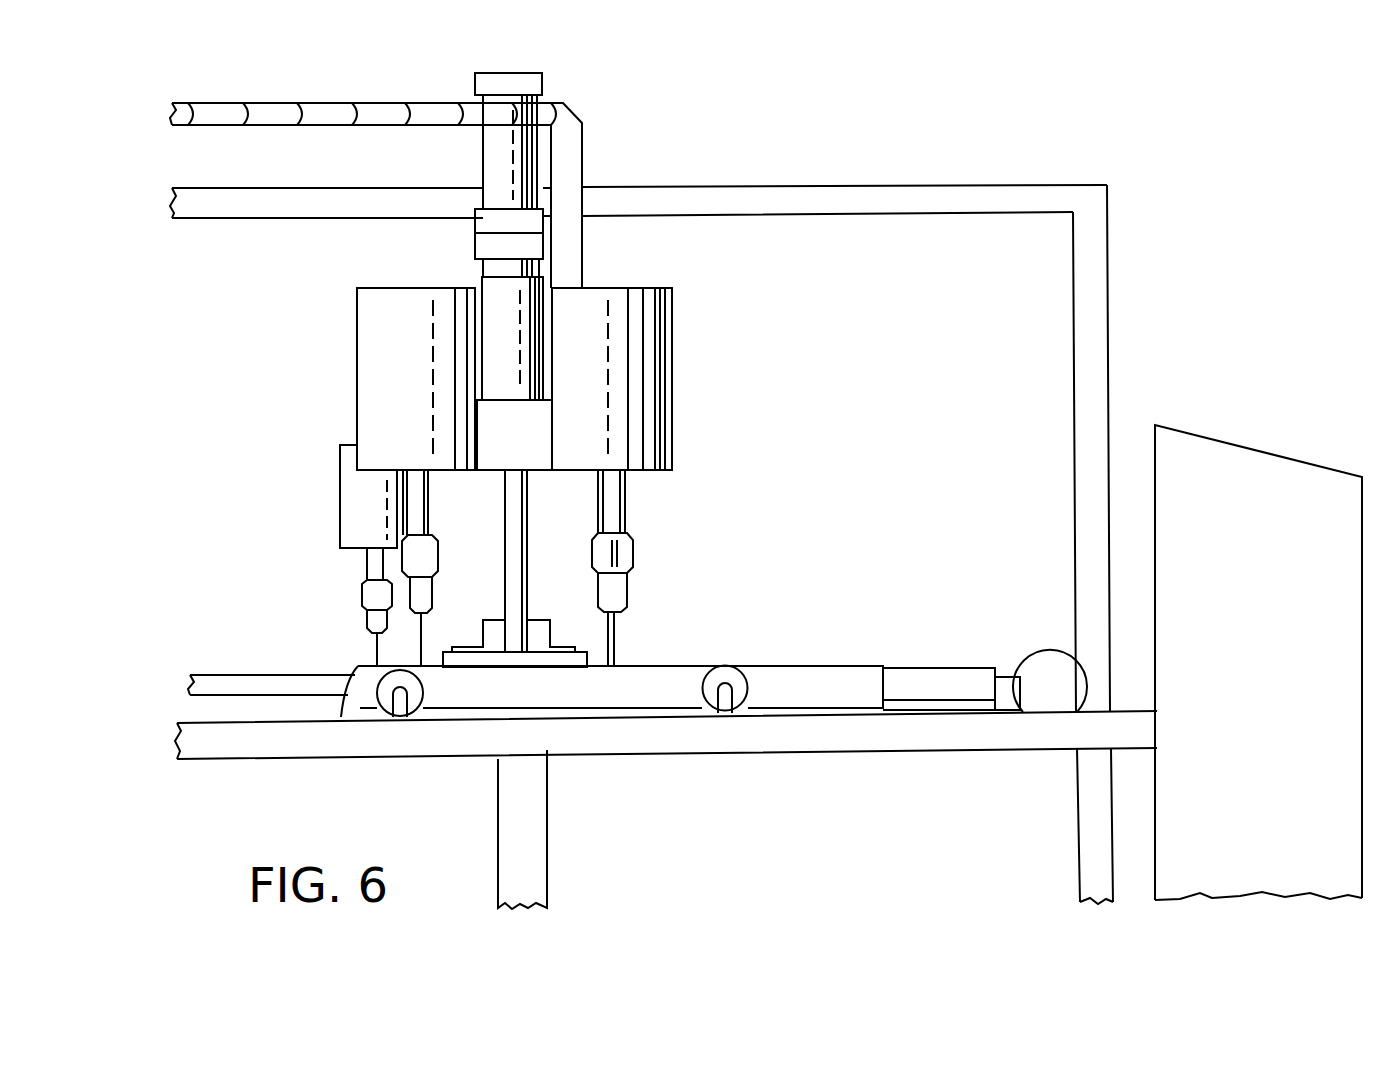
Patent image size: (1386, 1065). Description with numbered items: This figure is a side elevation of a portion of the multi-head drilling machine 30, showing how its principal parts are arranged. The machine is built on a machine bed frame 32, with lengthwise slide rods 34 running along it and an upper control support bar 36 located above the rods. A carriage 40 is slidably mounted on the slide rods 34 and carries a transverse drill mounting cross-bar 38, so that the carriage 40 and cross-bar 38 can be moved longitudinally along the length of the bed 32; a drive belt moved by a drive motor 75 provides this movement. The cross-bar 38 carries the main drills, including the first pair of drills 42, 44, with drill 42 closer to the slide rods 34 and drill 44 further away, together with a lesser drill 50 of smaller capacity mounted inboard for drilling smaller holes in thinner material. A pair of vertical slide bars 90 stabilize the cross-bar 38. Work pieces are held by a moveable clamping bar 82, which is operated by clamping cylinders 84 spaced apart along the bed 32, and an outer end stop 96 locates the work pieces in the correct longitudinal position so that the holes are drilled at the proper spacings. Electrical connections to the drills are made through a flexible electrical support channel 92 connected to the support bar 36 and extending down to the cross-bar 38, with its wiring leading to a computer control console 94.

The multi-head drilling machine 30 is at (858, 784).
The machine bed frame 32 is at (655, 742).
The lengthwise slide rods 34 is at (277, 668).
The upper control support bar 36 is at (886, 188).
The transverse drill mounting cross-bar 38 is at (532, 450).
The carriage 40 is at (492, 633).
The drill 42 is at (637, 351).
The drill 44 is at (399, 367).
The lesser drill 50 is at (368, 525).
The drive motor 75 is at (1050, 675).
The moveable clamping bar 82 is at (827, 677).
The clamping cylinders 84 is at (737, 680).
The vertical slide bars 90 is at (528, 598).
The flexible electrical support channel 92 is at (320, 127).
The computer control console 94 is at (1248, 447).
The outer end stop 96 is at (932, 693).